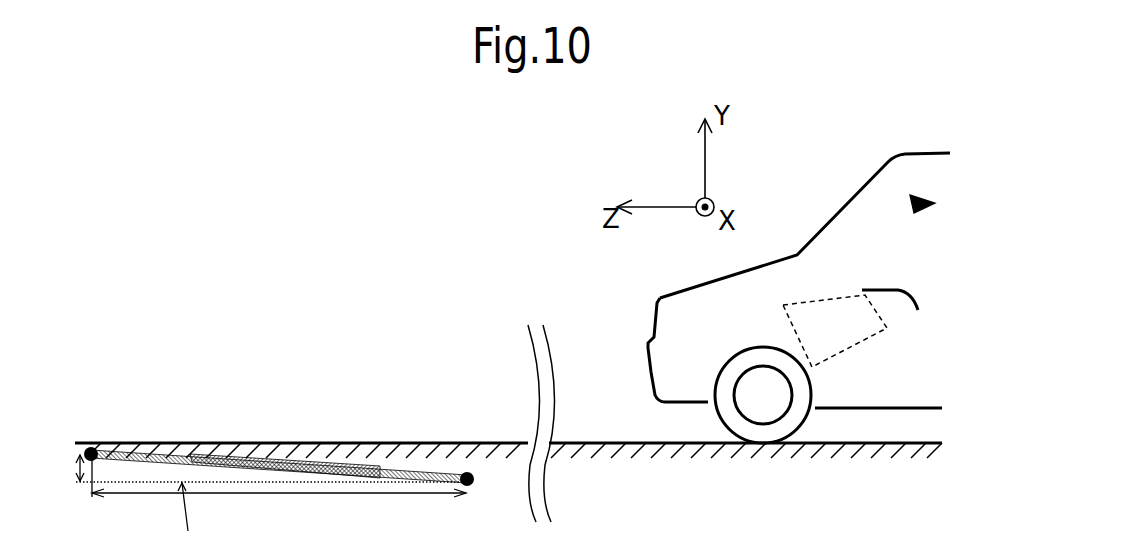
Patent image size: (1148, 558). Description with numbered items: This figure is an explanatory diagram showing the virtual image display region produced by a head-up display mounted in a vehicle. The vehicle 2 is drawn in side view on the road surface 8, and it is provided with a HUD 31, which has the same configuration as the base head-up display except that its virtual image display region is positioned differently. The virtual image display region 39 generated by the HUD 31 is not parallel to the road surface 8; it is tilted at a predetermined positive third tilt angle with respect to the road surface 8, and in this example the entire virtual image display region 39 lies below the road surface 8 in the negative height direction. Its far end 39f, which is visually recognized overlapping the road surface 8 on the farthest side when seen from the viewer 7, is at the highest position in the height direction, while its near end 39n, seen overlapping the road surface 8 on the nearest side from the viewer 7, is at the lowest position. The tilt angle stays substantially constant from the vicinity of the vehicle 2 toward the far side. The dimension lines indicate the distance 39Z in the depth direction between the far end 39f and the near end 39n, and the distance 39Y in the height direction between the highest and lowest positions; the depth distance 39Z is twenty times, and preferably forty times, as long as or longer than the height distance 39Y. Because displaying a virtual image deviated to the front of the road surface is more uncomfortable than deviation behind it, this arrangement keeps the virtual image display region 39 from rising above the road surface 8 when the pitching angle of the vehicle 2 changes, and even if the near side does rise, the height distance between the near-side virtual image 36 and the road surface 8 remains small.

The vehicle 2 is at (648, 355).
The viewer 7 is at (935, 203).
The road surface 8 is at (350, 442).
The HUD 31 is at (888, 329).
The virtual image 36 is at (241, 450).
The virtual image display region 39 is at (184, 456).
The far end 39f is at (96, 447).
The near end 39n is at (466, 472).
The distance in the height direction 39Y is at (80, 475).
The distance in the depth direction 39Z is at (157, 494).